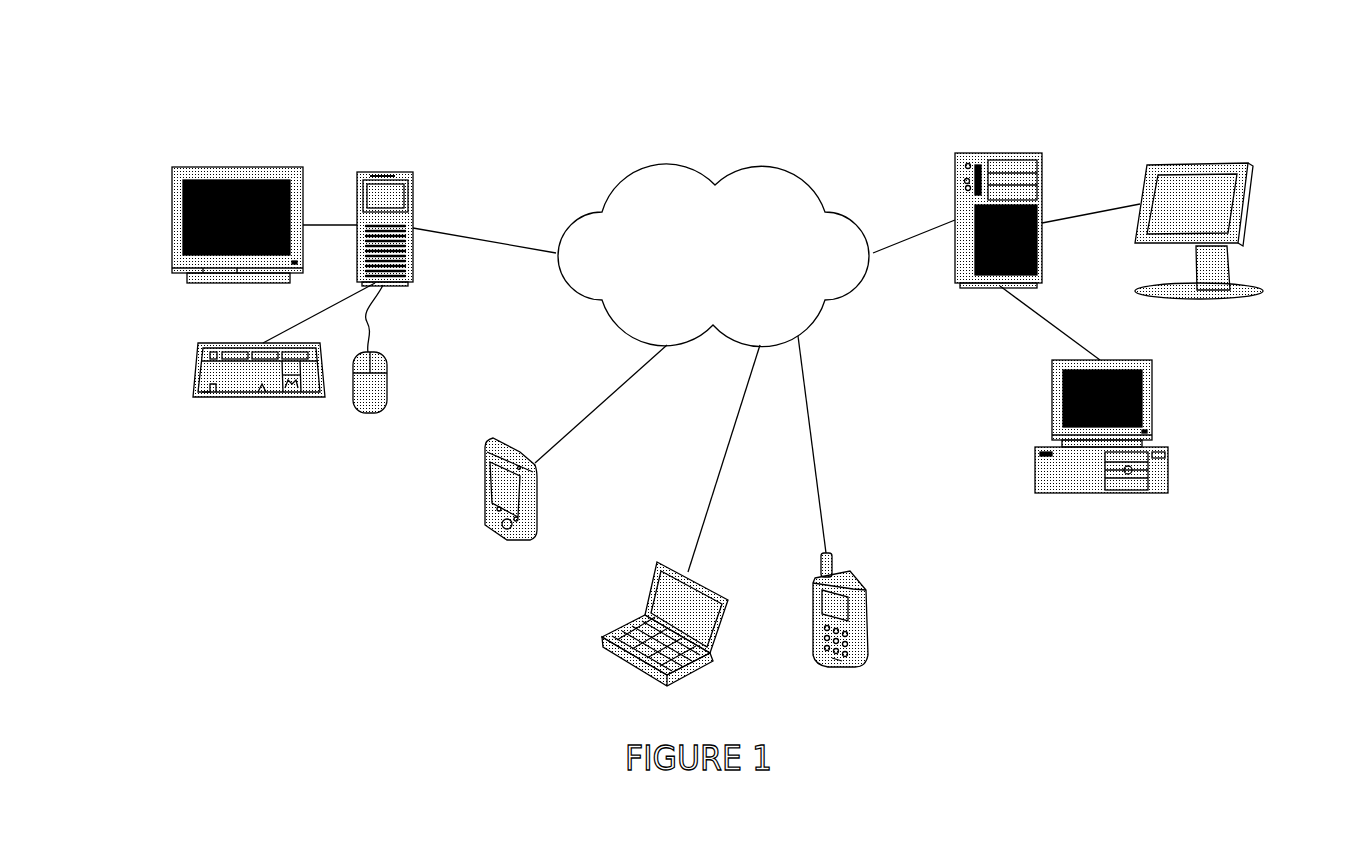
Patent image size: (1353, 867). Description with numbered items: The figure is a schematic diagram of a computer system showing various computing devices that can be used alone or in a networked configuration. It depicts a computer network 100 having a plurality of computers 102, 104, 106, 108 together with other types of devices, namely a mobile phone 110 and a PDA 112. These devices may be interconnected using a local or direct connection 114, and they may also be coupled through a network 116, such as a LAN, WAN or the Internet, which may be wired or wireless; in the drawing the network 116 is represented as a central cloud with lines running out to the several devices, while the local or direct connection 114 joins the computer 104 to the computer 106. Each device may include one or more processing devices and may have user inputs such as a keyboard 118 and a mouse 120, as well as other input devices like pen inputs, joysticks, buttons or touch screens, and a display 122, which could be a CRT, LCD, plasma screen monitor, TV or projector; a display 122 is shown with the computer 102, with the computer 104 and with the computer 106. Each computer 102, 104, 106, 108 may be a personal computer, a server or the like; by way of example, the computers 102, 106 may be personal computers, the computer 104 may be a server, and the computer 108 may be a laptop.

The computer network 100 is at (575, 67).
The computer 102 is at (383, 173).
The computer 104 is at (1042, 157).
The computer 106 is at (1035, 457).
The computer 108 is at (602, 637).
The mobile phone 110 is at (868, 615).
The PDA 112 is at (487, 512).
The local or direct connection 114 is at (1046, 322).
The network 116 is at (758, 165).
The keyboard 118 is at (193, 371).
The mouse 120 is at (387, 373).
The display 122 is at (172, 223).